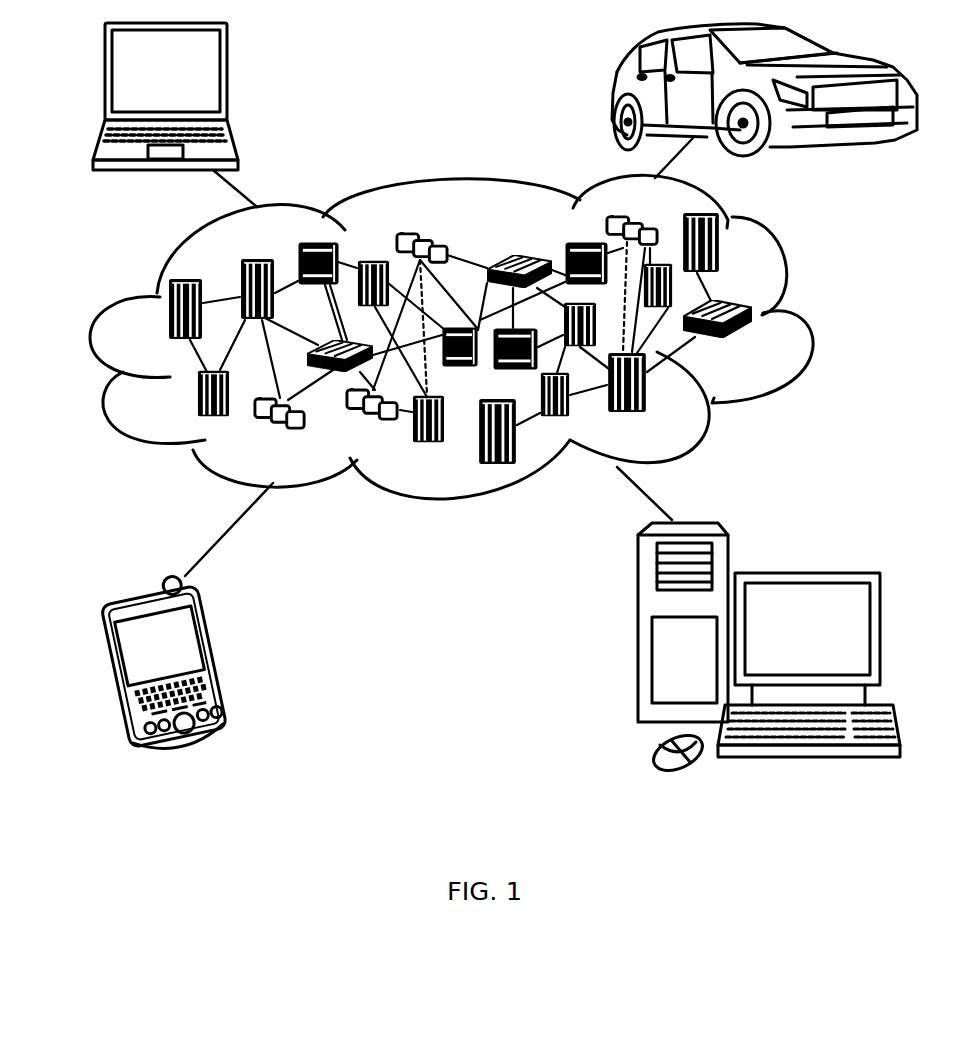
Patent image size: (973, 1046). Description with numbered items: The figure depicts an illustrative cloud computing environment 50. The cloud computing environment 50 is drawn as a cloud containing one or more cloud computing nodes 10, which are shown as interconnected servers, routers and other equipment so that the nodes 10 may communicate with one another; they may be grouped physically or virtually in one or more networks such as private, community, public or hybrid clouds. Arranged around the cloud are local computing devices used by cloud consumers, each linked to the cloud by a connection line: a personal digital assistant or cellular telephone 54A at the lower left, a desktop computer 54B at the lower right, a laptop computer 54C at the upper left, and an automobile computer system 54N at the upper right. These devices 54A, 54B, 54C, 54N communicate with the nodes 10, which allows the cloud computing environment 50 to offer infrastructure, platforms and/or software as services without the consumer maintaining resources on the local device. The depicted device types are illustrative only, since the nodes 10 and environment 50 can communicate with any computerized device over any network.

The cloud computing nodes 10 is at (758, 347).
The cloud computing environment 50 is at (806, 320).
The personal digital assistant or cellular telephone 54A is at (218, 652).
The desktop computer 54B is at (805, 573).
The laptop computer 54C is at (227, 78).
The automobile computer system 54N is at (612, 92).